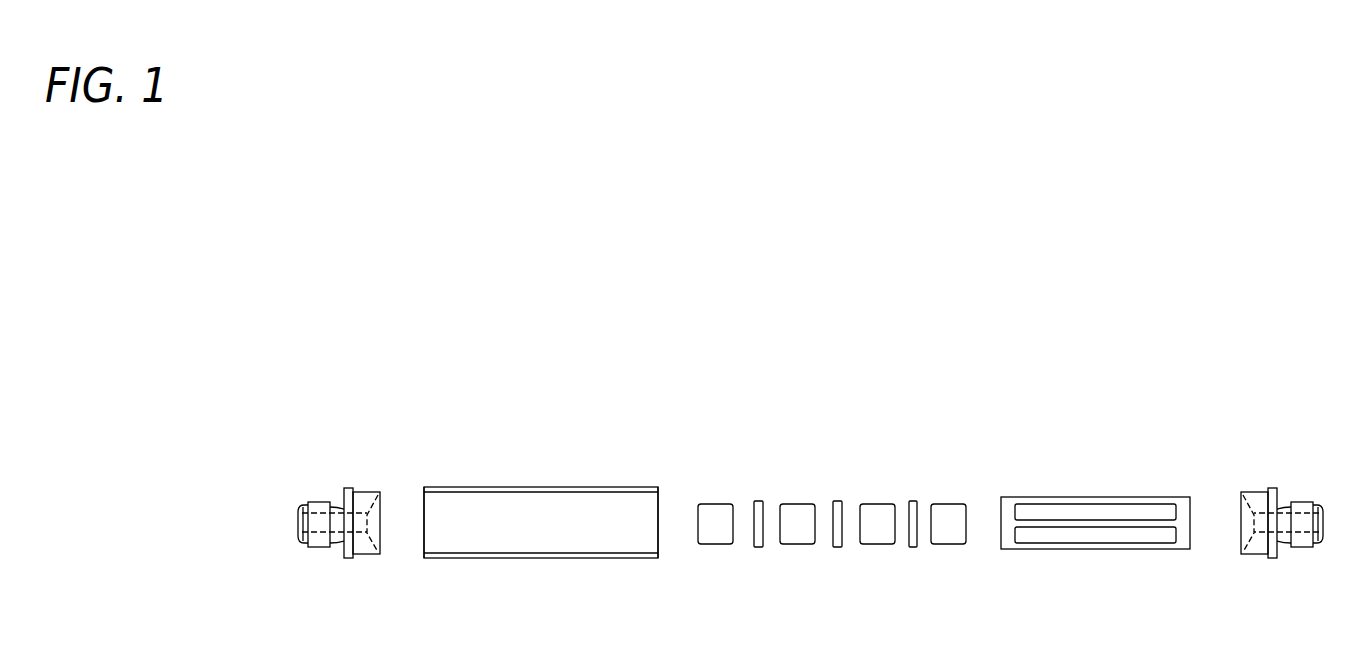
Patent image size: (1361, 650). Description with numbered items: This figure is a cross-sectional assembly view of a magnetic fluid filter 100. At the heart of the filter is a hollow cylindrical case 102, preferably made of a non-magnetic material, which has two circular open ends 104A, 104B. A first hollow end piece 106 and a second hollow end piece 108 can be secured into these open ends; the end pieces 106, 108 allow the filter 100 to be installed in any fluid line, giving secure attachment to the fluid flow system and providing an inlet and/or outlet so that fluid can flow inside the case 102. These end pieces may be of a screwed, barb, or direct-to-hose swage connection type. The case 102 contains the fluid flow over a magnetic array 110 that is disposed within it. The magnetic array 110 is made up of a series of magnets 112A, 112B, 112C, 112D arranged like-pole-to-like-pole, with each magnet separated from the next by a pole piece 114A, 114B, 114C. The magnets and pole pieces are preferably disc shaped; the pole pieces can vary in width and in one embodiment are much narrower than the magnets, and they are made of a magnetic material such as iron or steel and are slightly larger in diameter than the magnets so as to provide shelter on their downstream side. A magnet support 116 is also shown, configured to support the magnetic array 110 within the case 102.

The magnetic fluid filter 100 is at (762, 312).
The hollow cylindrical case 102 is at (528, 487).
The circular open end 104A is at (423, 520).
The circular open end 104B is at (660, 520).
The first hollow end piece 106 is at (348, 487).
The second hollow end piece 108 is at (1253, 492).
The magnetic array 110 is at (833, 432).
The magnet 112A is at (712, 503).
The magnet 112B is at (795, 503).
The magnet 112C is at (873, 503).
The magnet 112D is at (947, 503).
The pole piece 114A is at (760, 548).
The pole piece 114B is at (841, 548).
The pole piece 114C is at (915, 548).
The magnet support 116 is at (1092, 497).